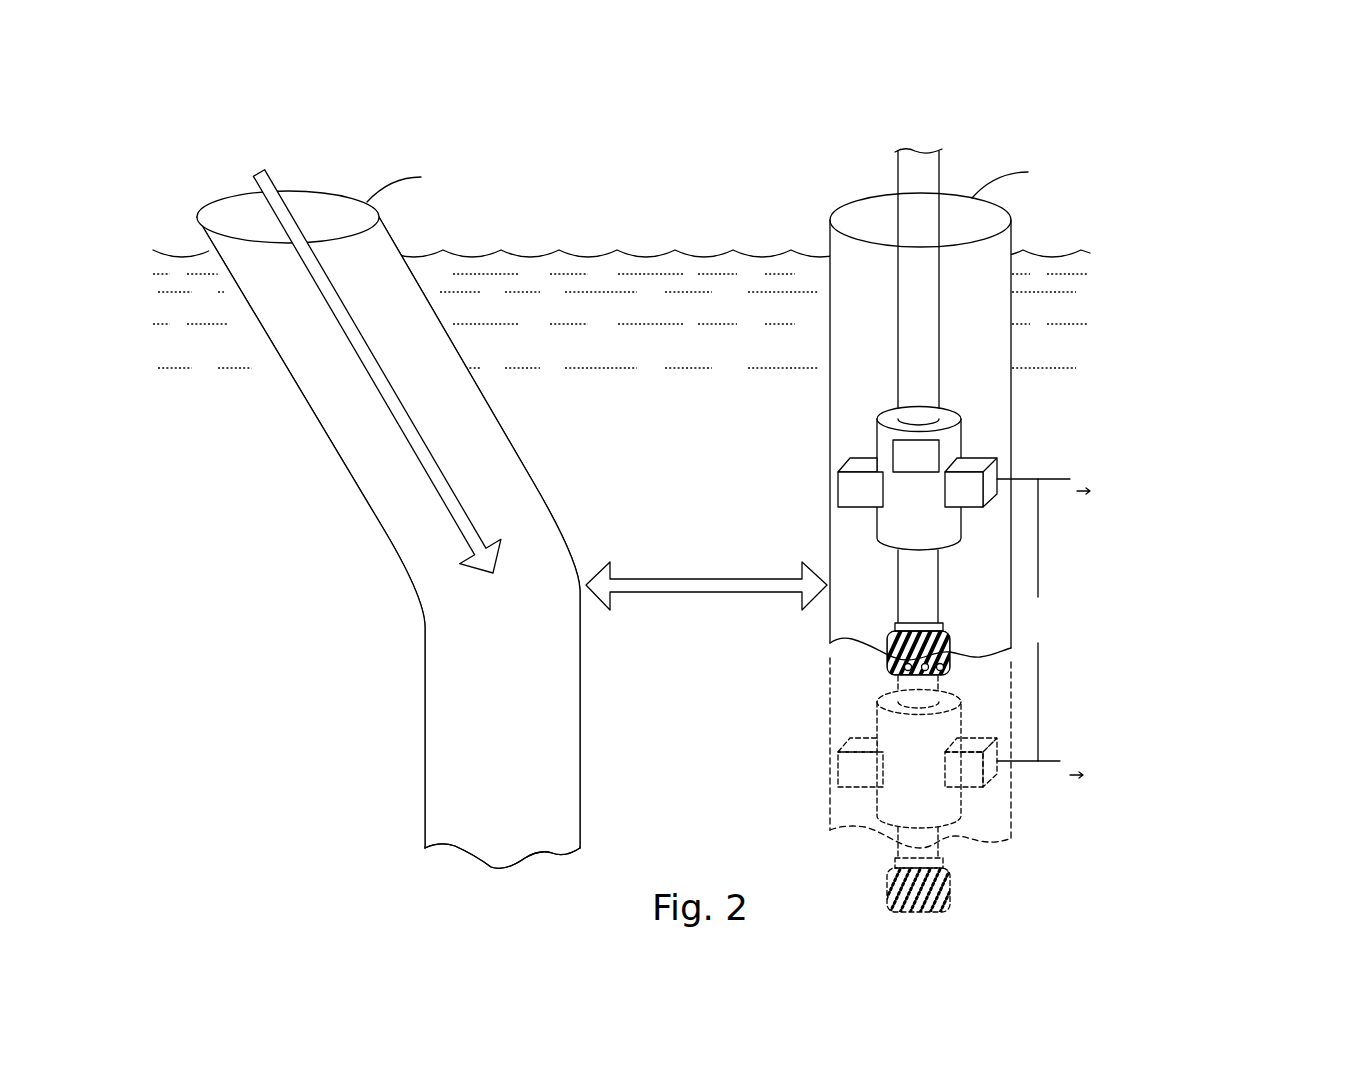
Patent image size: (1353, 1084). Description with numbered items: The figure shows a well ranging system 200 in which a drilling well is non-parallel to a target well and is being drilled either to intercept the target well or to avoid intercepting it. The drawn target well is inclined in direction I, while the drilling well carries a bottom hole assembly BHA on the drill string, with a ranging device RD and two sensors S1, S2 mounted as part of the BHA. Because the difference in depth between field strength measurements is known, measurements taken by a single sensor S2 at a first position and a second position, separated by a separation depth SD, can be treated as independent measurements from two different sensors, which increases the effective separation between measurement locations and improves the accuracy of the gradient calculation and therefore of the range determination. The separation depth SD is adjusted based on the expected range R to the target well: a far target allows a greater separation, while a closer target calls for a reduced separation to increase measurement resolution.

The well ranging system 200 is at (700, 503).
The target well inclination direction I is at (374, 356).
The bottom hole assembly BHA is at (919, 479).
The ranging device RD is at (916, 456).
The first sensor S1 is at (860, 482).
The second sensor S2 is at (971, 482).
The separation depth SD is at (1042, 620).
The range R is at (706, 580).